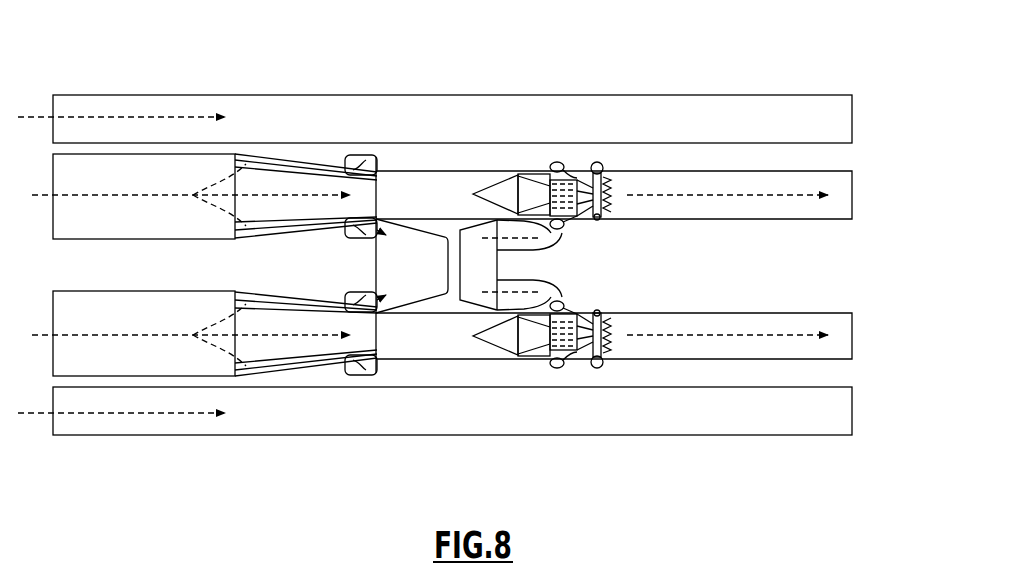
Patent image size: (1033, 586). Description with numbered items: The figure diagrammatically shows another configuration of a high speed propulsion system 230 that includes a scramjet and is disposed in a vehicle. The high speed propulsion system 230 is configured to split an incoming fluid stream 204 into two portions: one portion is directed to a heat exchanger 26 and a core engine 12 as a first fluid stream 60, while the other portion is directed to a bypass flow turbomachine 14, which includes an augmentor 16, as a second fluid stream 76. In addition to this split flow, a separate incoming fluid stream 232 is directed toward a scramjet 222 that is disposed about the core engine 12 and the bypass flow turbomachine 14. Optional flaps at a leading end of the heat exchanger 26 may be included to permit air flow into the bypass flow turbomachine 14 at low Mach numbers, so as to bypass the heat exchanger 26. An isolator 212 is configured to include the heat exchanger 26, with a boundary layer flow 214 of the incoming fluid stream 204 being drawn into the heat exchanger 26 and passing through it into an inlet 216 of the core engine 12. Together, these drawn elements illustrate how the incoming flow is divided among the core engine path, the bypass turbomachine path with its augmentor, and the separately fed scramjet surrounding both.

The high speed propulsion system 230 is at (752, 78).
The scramjet 222 is at (610, 95).
The separate incoming fluid stream 232 is at (190, 117).
The incoming fluid stream 204 is at (110, 195).
The first fluid stream 60 is at (293, 160).
The boundary layer flow 214 is at (313, 163).
The second fluid stream 76 is at (298, 195).
The isolator 212 is at (240, 380).
The heat exchanger 26 is at (273, 375).
The inlet 216 is at (370, 260).
The core engine 12 is at (375, 82).
The augmentor 16 is at (602, 302).
The bypass flow turbomachine 14 is at (478, 450).